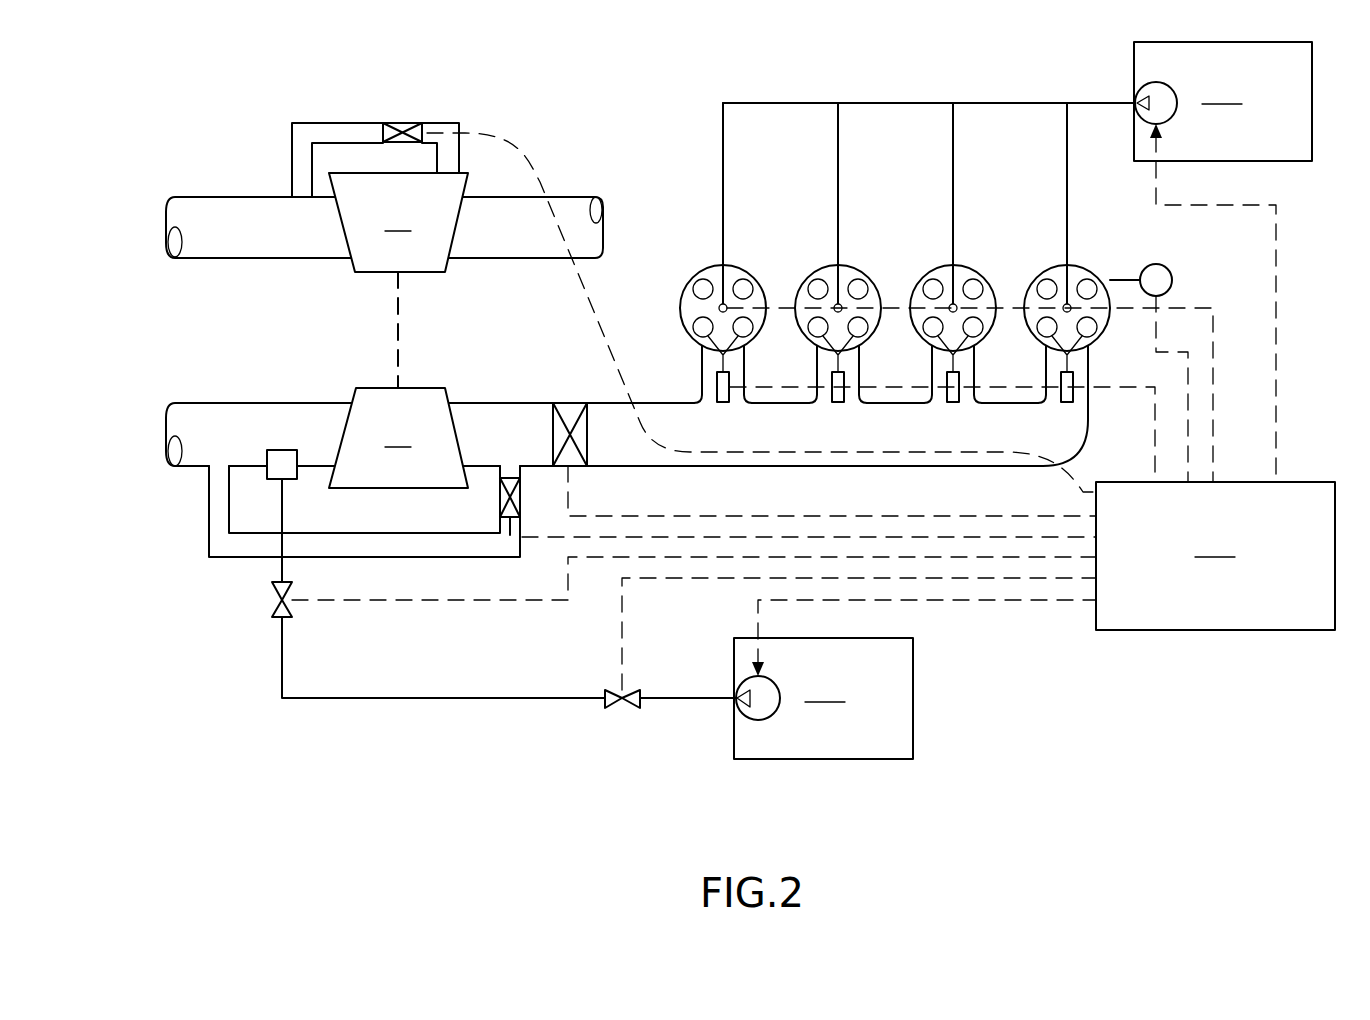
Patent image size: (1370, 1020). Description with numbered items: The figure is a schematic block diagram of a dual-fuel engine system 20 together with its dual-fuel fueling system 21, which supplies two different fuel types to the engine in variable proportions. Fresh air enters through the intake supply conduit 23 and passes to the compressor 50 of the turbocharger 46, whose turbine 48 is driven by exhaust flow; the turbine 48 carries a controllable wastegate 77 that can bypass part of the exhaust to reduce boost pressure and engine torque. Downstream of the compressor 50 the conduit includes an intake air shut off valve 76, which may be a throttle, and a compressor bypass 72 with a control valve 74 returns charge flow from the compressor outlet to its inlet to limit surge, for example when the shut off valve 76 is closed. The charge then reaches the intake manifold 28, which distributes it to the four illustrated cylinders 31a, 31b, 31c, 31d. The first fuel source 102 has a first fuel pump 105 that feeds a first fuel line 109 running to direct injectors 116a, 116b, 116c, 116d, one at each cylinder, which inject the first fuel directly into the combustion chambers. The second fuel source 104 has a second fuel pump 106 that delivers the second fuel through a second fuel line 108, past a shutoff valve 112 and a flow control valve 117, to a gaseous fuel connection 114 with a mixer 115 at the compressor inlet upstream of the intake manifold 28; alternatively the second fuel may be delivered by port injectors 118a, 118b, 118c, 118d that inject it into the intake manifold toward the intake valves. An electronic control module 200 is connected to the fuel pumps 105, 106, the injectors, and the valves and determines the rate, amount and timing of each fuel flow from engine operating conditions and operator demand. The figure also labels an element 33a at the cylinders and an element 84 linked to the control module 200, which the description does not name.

The dual-fuel engine system 20 is at (620, 110).
The dual-fuel fueling system 21 is at (1052, 650).
The intake supply conduit 23 is at (190, 403).
The engine intake manifold 28 is at (832, 468).
The cylinder 31a is at (1034, 270).
The cylinder 31b is at (920, 270).
The cylinder 31c is at (805, 270).
The cylinder 31d is at (690, 270).
The spark plug 33a is at (970, 370).
The turbocharger 46 is at (370, 337).
The turbine 48 is at (384, 197).
The compressor 50 is at (398, 438).
The compressor bypass 72 is at (215, 560).
The control valve 74 is at (508, 478).
The intake air shut off valve 76 is at (570, 403).
The controllable wastegate 77 is at (398, 123).
The pressure sensor 84 is at (1148, 265).
The first fuel source 102 is at (1223, 101).
The second fuel source 104 is at (823, 698).
The first fuel pump 105 is at (1168, 82).
The second fuel pump 106 is at (776, 719).
The second fuel line 108 is at (462, 700).
The first fuel line 109 is at (898, 103).
The shutoff valve 112 is at (622, 706).
The gaseous fuel connection 114 is at (278, 483).
The mixer 115 is at (277, 450).
The direct injector 116a is at (1080, 271).
The direct injector 116b is at (967, 270).
The direct injector 116c is at (852, 270).
The direct injector 116d is at (737, 270).
The flow control valve 117 is at (272, 600).
The port injector 118a is at (1067, 404).
The port injector 118b is at (953, 404).
The port injector 118c is at (838, 404).
The port injector 118d is at (723, 404).
The electronic control module 200 is at (1215, 556).